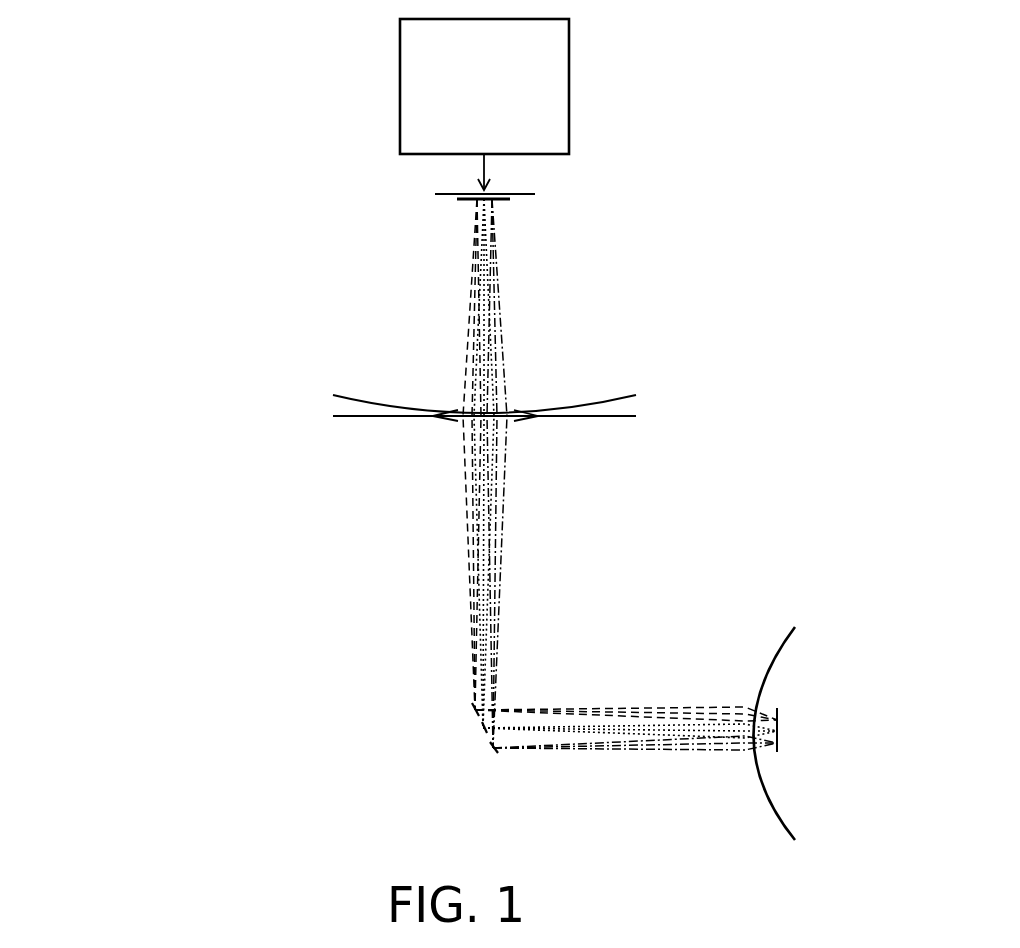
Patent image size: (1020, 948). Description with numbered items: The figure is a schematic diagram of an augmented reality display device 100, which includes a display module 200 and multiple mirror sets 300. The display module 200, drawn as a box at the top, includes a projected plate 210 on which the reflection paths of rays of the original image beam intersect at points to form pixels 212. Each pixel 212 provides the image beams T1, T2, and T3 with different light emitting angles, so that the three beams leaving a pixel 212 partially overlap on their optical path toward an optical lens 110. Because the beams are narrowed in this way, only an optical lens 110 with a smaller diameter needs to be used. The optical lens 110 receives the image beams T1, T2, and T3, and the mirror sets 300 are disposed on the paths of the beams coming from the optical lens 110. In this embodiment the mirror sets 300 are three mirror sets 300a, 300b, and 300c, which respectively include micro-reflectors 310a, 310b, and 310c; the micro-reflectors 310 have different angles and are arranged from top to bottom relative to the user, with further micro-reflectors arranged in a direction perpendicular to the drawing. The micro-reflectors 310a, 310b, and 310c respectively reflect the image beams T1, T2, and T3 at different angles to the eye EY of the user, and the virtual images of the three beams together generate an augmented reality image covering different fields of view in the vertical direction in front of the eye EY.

The augmented reality display device 100 is at (237, 72).
The display module 200 is at (552, 79).
The projected plate 210 is at (523, 197).
The pixel 212 is at (460, 199).
The optical lens 110 is at (457, 418).
The mirror sets 300 is at (270, 719).
The mirror set 300a is at (270, 764).
The mirror set 300b is at (264, 723).
The mirror set 300c is at (262, 684).
The micro-reflectors 310 is at (270, 719).
The micro-reflector 310a is at (493, 747).
The micro-reflector 310b is at (483, 727).
The micro-reflector 310c is at (475, 707).
The image beam T1 is at (502, 582).
The image beam T2 is at (542, 727).
The image beam T3 is at (473, 677).
The eye EY is at (778, 748).